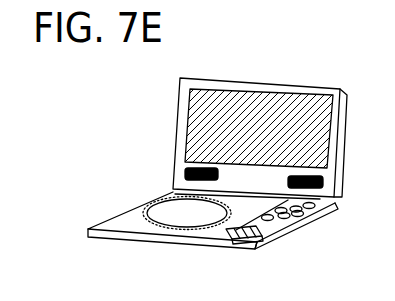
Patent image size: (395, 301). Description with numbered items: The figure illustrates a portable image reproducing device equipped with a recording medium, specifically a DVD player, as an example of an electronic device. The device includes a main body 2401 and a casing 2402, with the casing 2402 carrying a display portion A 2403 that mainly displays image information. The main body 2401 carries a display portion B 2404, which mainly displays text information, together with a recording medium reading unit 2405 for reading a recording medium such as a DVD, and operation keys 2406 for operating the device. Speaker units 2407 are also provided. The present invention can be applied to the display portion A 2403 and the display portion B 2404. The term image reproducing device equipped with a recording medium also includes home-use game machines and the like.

The main body 2401 is at (166, 192).
The casing 2402 is at (179, 118).
The display portion A 2403 is at (282, 102).
The display portion B 2404 is at (245, 247).
The recording medium reading unit 2405 is at (177, 225).
The operation keys 2406 is at (320, 215).
The speaker units 2407 is at (327, 203).